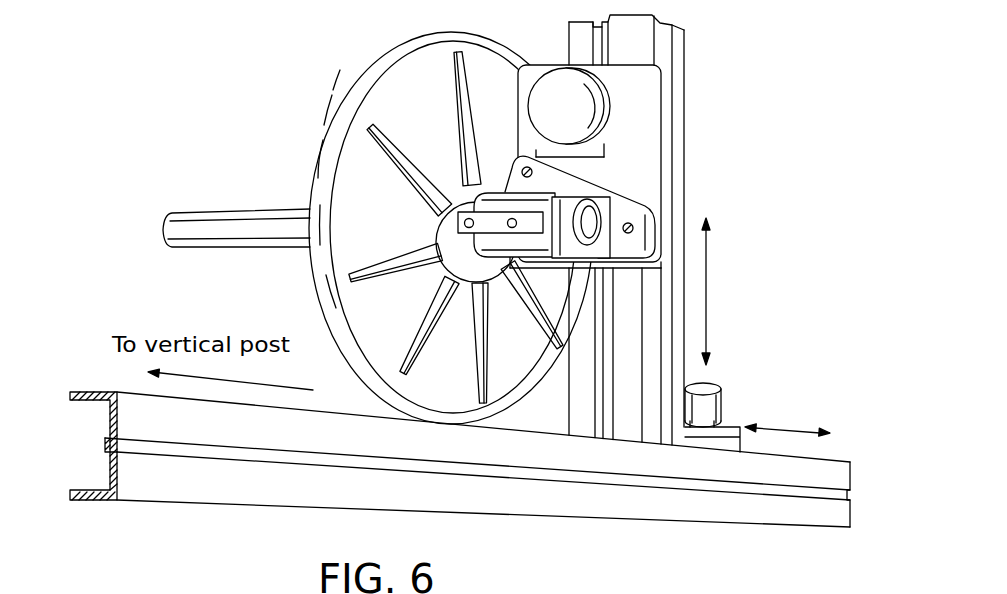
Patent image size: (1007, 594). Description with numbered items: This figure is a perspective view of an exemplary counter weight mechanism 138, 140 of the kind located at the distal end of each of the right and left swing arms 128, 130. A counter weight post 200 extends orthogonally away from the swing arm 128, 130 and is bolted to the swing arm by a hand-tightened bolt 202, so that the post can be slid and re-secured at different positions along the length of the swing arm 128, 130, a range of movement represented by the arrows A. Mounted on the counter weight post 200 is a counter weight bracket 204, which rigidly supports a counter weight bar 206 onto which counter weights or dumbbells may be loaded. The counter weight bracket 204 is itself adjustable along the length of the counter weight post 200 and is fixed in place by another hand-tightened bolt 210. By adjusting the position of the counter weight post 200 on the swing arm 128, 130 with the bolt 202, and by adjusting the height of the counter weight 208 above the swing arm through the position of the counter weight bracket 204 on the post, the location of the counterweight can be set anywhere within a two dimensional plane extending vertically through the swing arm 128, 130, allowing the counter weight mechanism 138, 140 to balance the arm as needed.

The right swing arm 128 is at (460, 479).
The left swing arm 130 is at (617, 519).
The counter weight mechanism 138 is at (809, 181).
The counter weight mechanism 140 is at (742, 191).
The counter weight post 200 is at (673, 328).
The hand-tightened bolt 202 is at (723, 402).
The counter weight bracket 204 is at (653, 152).
The counter weight bar 206 is at (220, 212).
The counter weight 208 is at (325, 141).
The hand-tightened bolt 210 is at (558, 73).
The arrows A is at (795, 428).